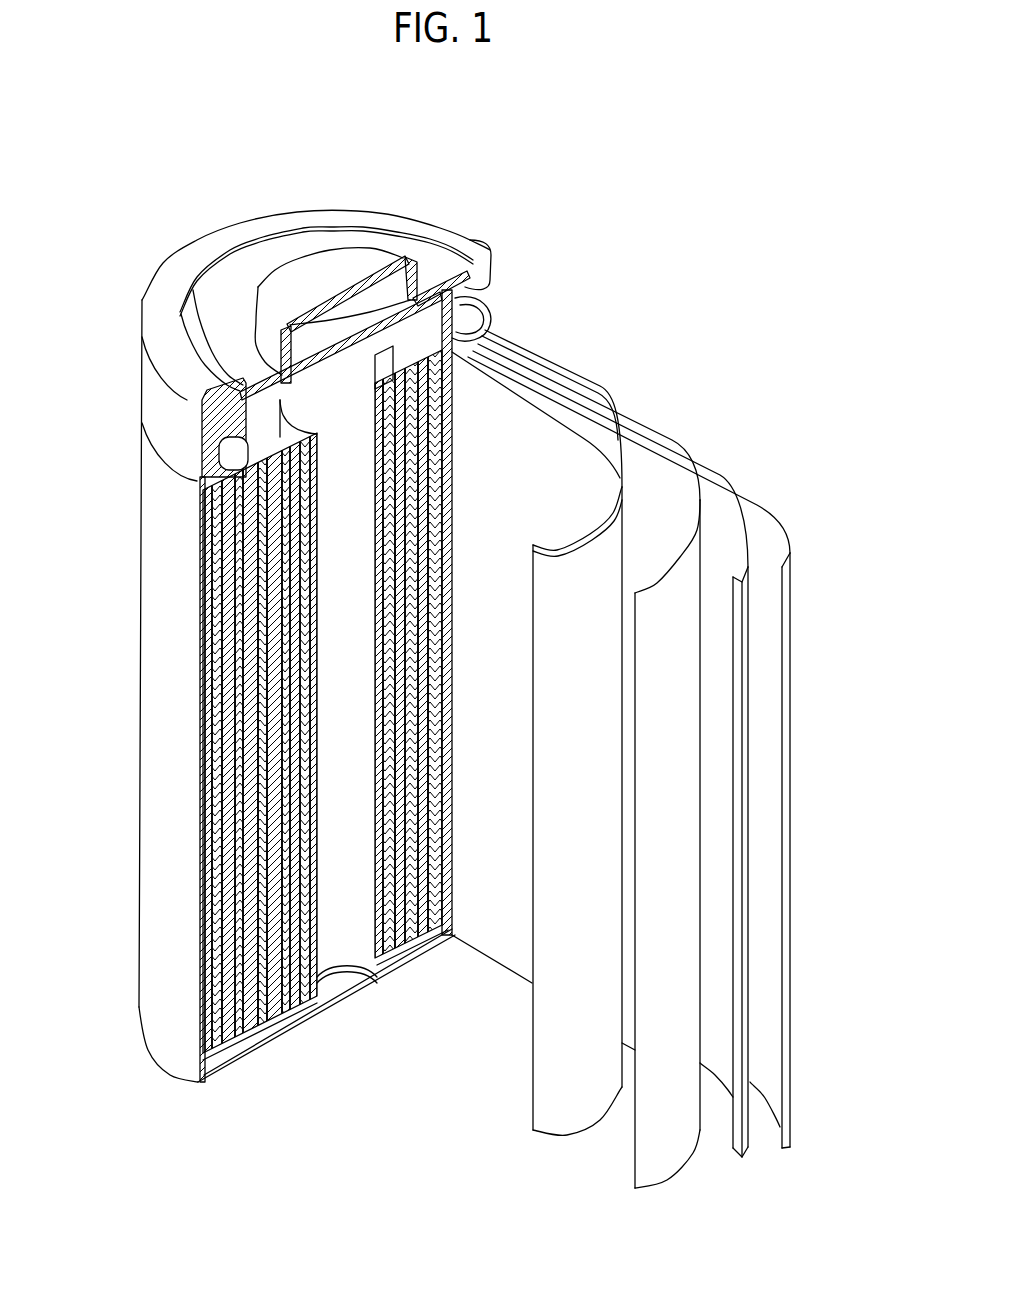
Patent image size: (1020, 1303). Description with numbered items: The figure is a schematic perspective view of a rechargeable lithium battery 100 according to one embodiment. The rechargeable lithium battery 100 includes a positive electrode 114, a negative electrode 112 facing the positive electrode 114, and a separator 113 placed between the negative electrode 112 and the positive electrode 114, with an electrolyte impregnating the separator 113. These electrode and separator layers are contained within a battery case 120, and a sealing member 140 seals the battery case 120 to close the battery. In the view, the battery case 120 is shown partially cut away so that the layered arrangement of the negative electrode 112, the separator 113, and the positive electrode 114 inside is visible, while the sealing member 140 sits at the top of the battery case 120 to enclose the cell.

The rechargeable lithium battery 100 is at (551, 210).
The negative electrode 112 is at (753, 502).
The separator 113 is at (560, 420).
The positive electrode 114 is at (632, 460).
The battery case 120 is at (146, 592).
The sealing member 140 is at (320, 270).